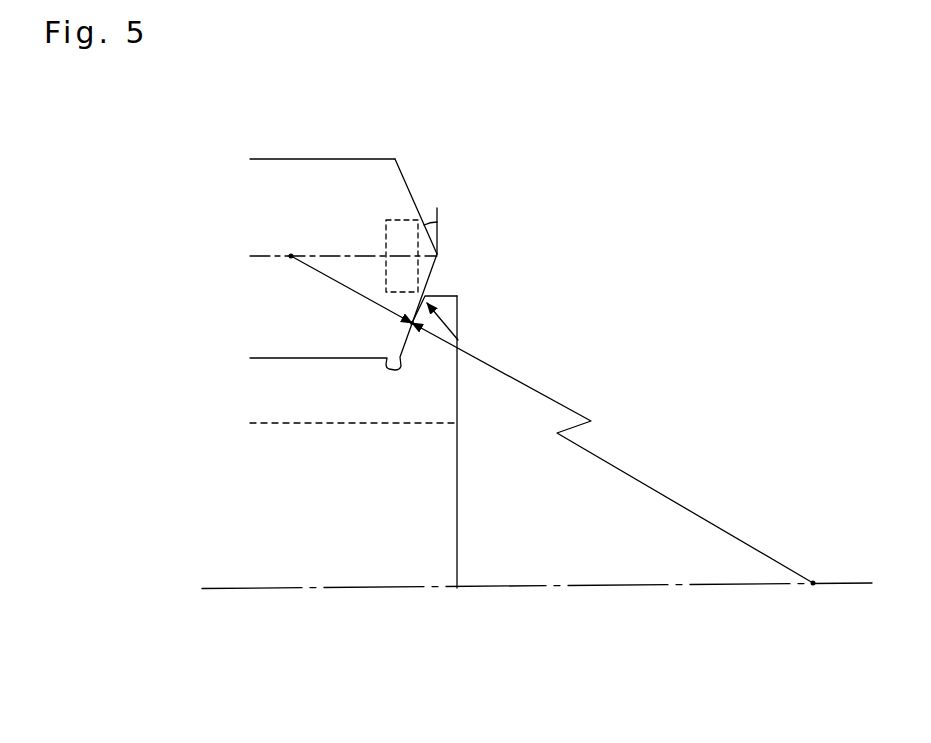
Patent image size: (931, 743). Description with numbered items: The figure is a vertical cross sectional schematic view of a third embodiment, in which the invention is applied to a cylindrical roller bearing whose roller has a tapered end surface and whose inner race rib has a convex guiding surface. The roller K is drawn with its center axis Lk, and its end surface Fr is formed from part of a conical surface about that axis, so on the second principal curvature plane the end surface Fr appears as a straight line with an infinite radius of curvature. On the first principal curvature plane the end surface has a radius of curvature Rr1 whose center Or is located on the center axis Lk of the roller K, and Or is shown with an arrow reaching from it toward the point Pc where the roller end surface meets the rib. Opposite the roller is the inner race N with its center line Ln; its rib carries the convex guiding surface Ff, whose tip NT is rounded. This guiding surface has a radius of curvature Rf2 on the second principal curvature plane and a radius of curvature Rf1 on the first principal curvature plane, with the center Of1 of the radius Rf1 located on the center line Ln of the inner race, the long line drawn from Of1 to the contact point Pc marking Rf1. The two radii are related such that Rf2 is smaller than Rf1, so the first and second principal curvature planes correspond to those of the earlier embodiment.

The roller K is at (340, 171).
The end surface of the roller Fr is at (413, 192).
The center of the radius of curvature Or is at (283, 242).
The center axis of the roller Lk is at (272, 258).
The rear flank radius Rr1 is at (351, 289).
The contact point Pc is at (412, 323).
The front flank of tool Ff is at (427, 295).
The tool N is at (458, 556).
The tool tip NT is at (448, 308).
The radius of curvature Rf2 is at (449, 328).
The radius of curvature Rf1 is at (612, 453).
The center of the radius of curvature Rf1 Of1 is at (812, 599).
The center line of the inner race Ln is at (553, 587).